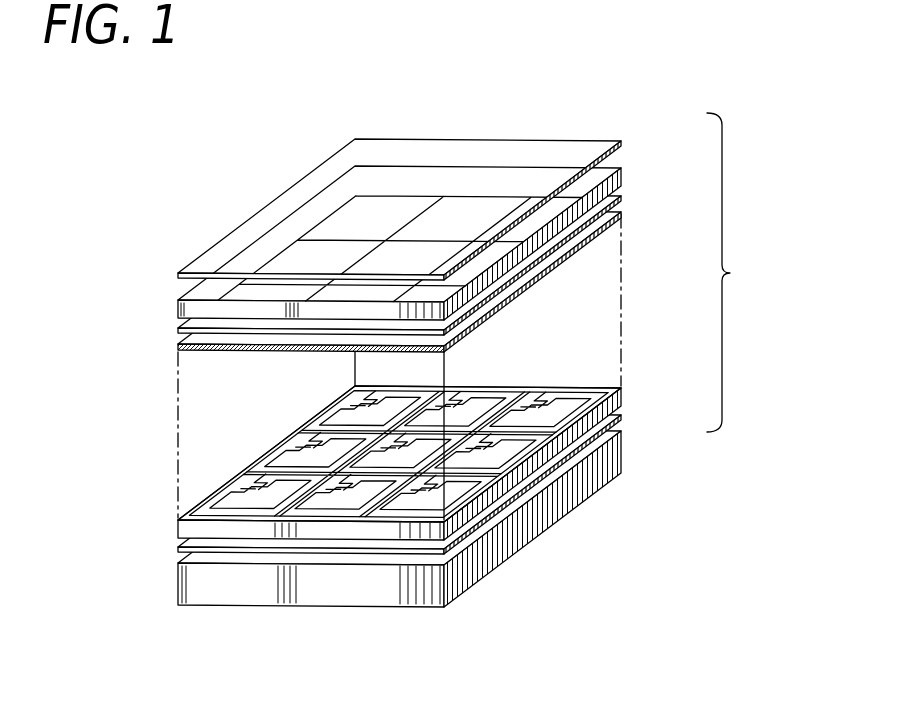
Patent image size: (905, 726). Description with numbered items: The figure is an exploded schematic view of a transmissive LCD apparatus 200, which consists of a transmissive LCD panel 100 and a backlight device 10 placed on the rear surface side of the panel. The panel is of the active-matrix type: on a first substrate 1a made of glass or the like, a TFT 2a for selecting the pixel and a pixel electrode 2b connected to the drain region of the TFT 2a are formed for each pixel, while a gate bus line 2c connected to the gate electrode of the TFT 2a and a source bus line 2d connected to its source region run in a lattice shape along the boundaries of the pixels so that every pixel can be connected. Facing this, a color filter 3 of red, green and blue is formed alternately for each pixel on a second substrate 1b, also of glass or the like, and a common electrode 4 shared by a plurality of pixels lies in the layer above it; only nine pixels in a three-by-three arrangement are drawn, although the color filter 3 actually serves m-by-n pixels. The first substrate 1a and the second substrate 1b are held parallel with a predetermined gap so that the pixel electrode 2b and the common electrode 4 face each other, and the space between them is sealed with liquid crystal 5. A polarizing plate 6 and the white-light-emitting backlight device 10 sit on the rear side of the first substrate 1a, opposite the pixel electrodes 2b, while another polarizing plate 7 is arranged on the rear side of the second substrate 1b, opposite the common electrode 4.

The transmissive LCD apparatus 200 is at (297, 108).
The transmissive LCD panel 100 is at (775, 291).
The polarizing plate 7 is at (615, 141).
The second substrate 1b is at (616, 170).
The color filter 3 is at (616, 197).
The common electrode 4 is at (616, 215).
The liquid crystal 5 is at (587, 283).
The TFT 2a is at (551, 370).
The pixel electrode 2b is at (598, 388).
The first substrate 1a is at (620, 402).
The polarizing plate 6 is at (620, 414).
The backlight device 10 is at (477, 567).
The gate bus line 2c is at (538, 432).
The source bus line 2d is at (298, 500).